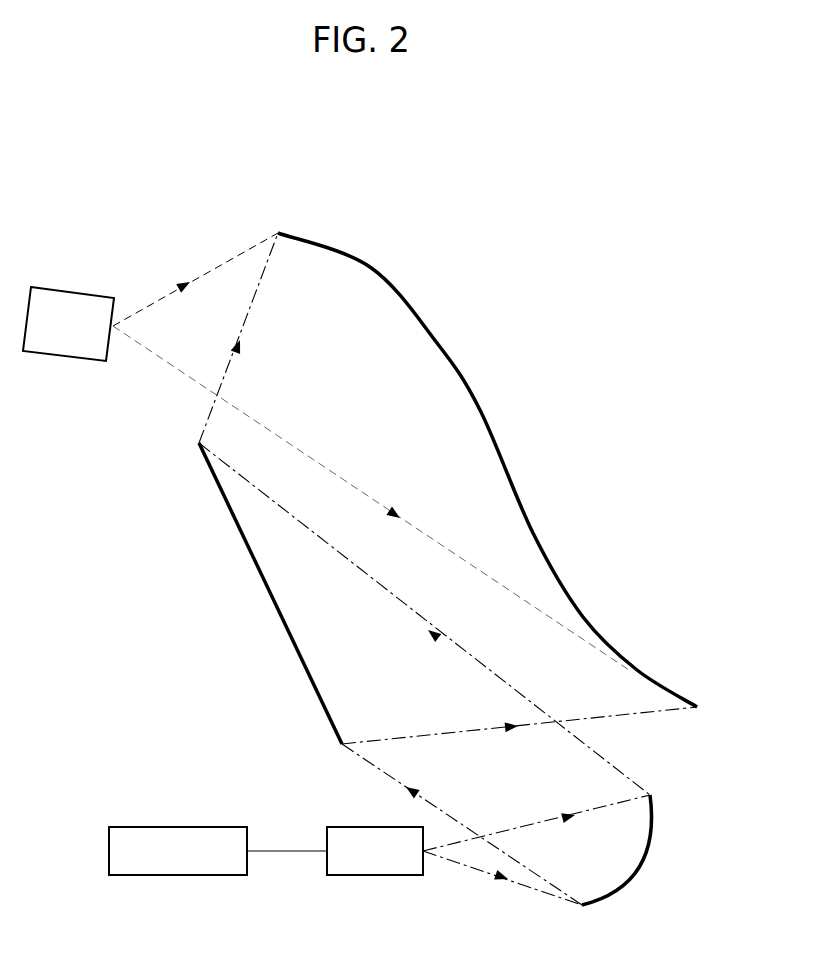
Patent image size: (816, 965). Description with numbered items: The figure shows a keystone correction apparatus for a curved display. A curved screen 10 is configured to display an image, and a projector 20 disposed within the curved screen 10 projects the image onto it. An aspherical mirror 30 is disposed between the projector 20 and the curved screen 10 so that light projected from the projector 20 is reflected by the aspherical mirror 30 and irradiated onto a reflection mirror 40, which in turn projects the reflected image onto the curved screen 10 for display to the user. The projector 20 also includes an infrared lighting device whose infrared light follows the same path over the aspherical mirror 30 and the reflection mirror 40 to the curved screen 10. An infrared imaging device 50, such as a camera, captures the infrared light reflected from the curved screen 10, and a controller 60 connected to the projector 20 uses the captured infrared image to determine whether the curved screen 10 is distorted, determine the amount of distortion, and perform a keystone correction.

The curved screen 10 is at (480, 412).
The projector 20 is at (373, 877).
The aspherical mirror 30 is at (640, 863).
The reflection mirror 40 is at (268, 597).
The infrared imaging device 50 is at (72, 292).
The controller 60 is at (178, 875).